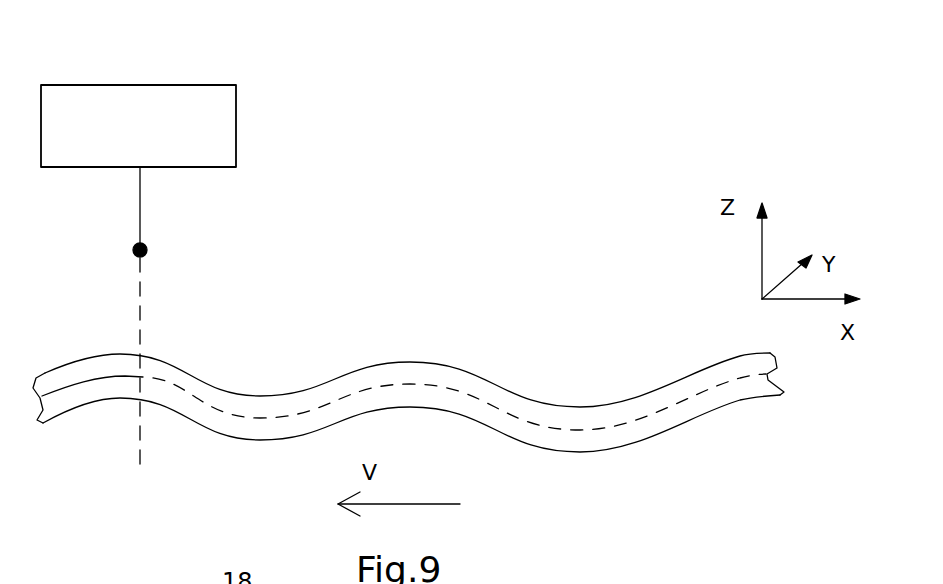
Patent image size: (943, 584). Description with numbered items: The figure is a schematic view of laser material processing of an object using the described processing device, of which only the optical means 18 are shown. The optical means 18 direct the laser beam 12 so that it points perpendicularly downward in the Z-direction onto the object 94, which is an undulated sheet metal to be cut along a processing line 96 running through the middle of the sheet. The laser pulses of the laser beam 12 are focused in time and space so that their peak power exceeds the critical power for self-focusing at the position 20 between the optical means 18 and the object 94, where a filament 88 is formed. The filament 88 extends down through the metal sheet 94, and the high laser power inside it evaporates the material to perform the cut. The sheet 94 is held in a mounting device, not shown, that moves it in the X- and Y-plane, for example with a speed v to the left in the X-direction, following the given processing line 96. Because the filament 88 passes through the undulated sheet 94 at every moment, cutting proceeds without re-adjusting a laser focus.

The optical means 18 is at (198, 107).
The laser beam 12 is at (140, 211).
The position 20 is at (134, 251).
The filament 88 is at (141, 314).
The object 94 is at (670, 424).
The processing line 96 is at (494, 407).